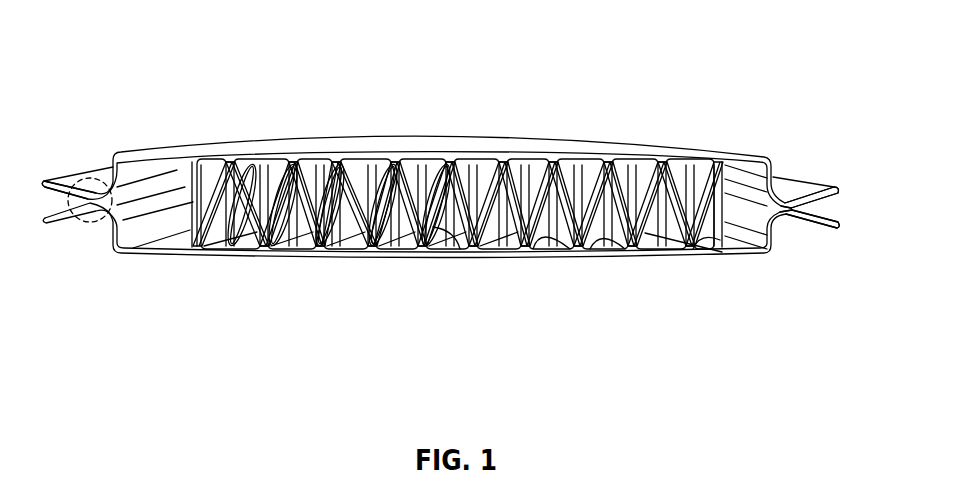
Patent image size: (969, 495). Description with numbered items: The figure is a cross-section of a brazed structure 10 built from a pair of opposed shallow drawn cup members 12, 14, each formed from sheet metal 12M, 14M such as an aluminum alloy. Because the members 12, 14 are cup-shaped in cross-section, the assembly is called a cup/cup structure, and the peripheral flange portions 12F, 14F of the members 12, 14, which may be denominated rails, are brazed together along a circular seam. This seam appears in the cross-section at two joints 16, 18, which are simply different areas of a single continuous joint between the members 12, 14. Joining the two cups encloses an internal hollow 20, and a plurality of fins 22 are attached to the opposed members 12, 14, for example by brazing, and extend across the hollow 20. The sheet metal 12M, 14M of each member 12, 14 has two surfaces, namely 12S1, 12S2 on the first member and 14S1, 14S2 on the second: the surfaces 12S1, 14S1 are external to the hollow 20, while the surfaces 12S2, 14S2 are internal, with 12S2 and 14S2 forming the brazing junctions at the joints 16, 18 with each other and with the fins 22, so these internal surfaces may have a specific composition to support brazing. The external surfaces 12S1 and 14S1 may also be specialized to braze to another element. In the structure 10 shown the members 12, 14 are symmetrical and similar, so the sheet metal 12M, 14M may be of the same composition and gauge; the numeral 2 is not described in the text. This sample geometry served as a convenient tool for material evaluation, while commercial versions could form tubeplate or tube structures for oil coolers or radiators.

The brazed structure 10 is at (120, 30).
The cup member 12 is at (703, 143).
The peripheral flange portion 12F is at (807, 190).
The sheet metal 12M is at (529, 157).
The surface 12S1 is at (423, 157).
The surface 12S2 is at (365, 157).
The cup member 14 is at (759, 268).
The peripheral flange portion 14F is at (833, 214).
The sheet metal 14M is at (200, 250).
The surface 14S1 is at (630, 255).
The surface 14S2 is at (703, 248).
The joint 16 is at (794, 211).
The joint 18 is at (87, 223).
The detail region 2 is at (97, 220).
The internal hollow 20 is at (570, 240).
The fins 22 is at (455, 250).